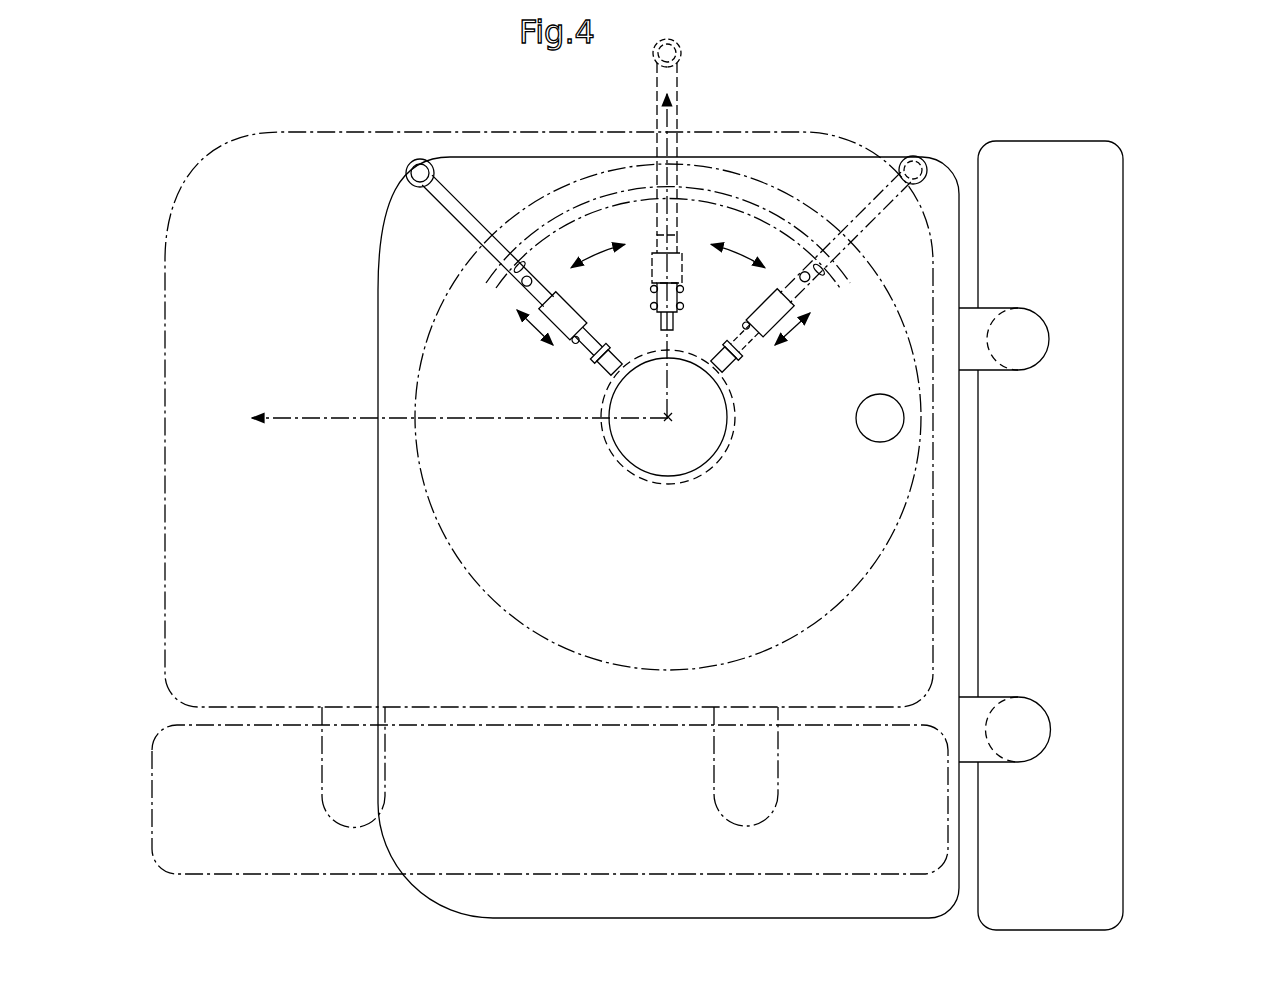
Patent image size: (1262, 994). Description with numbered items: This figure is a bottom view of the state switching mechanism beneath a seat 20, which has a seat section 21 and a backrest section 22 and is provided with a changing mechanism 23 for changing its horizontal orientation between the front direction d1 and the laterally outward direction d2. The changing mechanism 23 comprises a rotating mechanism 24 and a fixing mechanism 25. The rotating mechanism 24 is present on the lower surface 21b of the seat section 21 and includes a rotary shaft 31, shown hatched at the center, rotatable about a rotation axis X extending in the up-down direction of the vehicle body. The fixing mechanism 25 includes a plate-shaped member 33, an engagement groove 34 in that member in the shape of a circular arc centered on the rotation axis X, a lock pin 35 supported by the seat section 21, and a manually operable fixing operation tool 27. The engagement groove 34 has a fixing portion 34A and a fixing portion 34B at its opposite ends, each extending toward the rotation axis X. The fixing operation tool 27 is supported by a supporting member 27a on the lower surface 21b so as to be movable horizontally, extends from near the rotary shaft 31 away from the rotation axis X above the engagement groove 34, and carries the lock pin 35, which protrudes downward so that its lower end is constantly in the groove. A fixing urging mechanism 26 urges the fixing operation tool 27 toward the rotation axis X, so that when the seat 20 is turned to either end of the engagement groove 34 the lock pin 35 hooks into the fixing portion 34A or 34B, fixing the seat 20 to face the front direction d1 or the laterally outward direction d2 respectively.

The seat 20 is at (203, 178).
The seat section 21 is at (382, 323).
The lower surface 21b is at (470, 808).
The backrest section 22 is at (1113, 203).
The changing mechanism 23 is at (368, 187).
The rotating mechanism 24 is at (765, 392).
The fixing mechanism 25 is at (527, 355).
The fixing urging mechanism 26 is at (604, 357).
The fixing operation tool 27 is at (420, 159).
The supporting member 27a is at (580, 299).
The rotary shaft 31 is at (718, 448).
The plate-shaped member 33 is at (828, 635).
The engagement groove 34 is at (628, 202).
The fixing portion 34A is at (480, 253).
The fixing portion 34B is at (817, 265).
The lock pin 35 is at (518, 300).
The rotation axis X is at (668, 417).
The front direction d1 is at (330, 422).
The laterally outward direction d2 is at (680, 120).